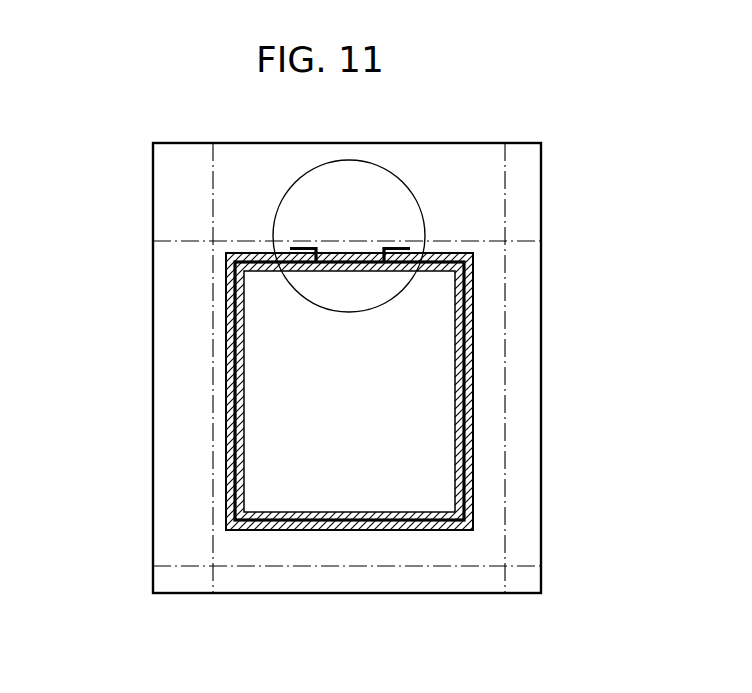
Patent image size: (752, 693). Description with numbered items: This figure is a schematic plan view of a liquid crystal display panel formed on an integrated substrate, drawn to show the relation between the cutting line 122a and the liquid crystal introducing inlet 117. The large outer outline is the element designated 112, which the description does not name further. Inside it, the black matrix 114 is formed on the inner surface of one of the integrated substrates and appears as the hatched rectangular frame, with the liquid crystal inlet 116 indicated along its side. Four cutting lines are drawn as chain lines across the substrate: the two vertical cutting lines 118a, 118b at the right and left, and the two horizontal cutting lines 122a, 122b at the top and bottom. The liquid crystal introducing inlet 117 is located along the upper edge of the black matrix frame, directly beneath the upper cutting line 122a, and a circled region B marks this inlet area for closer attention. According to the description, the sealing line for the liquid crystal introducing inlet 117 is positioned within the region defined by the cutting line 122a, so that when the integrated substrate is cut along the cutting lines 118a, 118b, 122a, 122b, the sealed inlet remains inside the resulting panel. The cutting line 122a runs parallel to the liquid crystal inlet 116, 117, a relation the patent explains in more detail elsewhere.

The substrate 112 is at (173, 495).
The black matrix 114 is at (225, 254).
The liquid crystal inlet 116 is at (228, 392).
The liquid crystal introducing inlet 117 is at (338, 223).
The cutting line 118a is at (505, 369).
The cutting line 118b is at (213, 170).
The cutting line 122a is at (486, 242).
The cutting line 122b is at (333, 566).
The enlarged detail region B is at (404, 182).